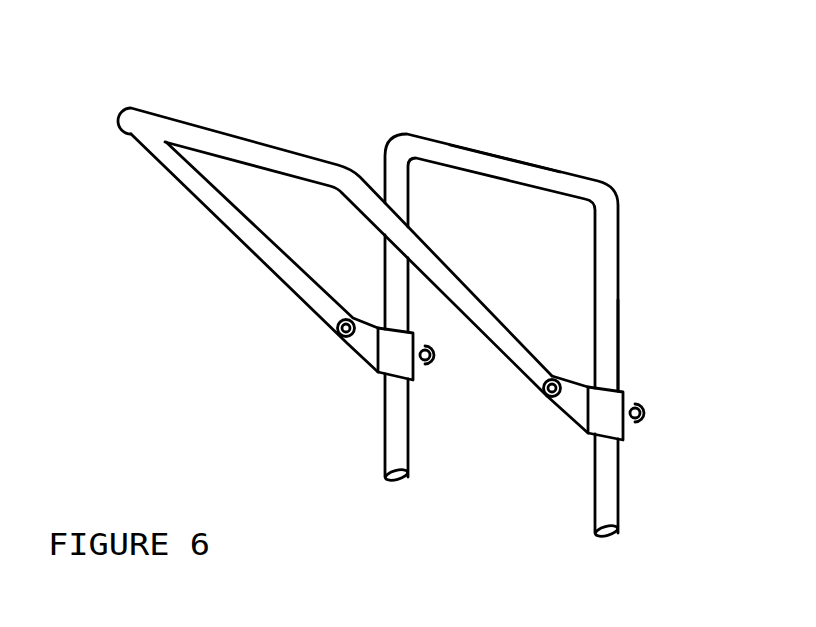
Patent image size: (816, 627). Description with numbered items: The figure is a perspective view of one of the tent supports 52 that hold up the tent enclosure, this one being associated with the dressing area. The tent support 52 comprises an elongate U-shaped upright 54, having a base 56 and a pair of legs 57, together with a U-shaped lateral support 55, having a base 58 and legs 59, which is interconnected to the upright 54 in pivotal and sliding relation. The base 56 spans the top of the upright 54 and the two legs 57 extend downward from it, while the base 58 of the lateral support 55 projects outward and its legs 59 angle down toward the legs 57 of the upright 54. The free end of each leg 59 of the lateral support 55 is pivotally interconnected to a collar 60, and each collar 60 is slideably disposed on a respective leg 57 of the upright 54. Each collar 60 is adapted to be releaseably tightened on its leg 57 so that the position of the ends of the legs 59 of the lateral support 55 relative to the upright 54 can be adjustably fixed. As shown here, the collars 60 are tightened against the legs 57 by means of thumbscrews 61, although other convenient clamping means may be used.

The tent support 52 is at (593, 304).
The upright 54 is at (637, 248).
The lateral support 55 is at (321, 237).
The base 56 is at (495, 162).
The leg 57 is at (398, 187).
The base 58 is at (225, 147).
The leg 59 is at (273, 265).
The collar 60 is at (370, 348).
The thumbscrew 61 is at (432, 363).